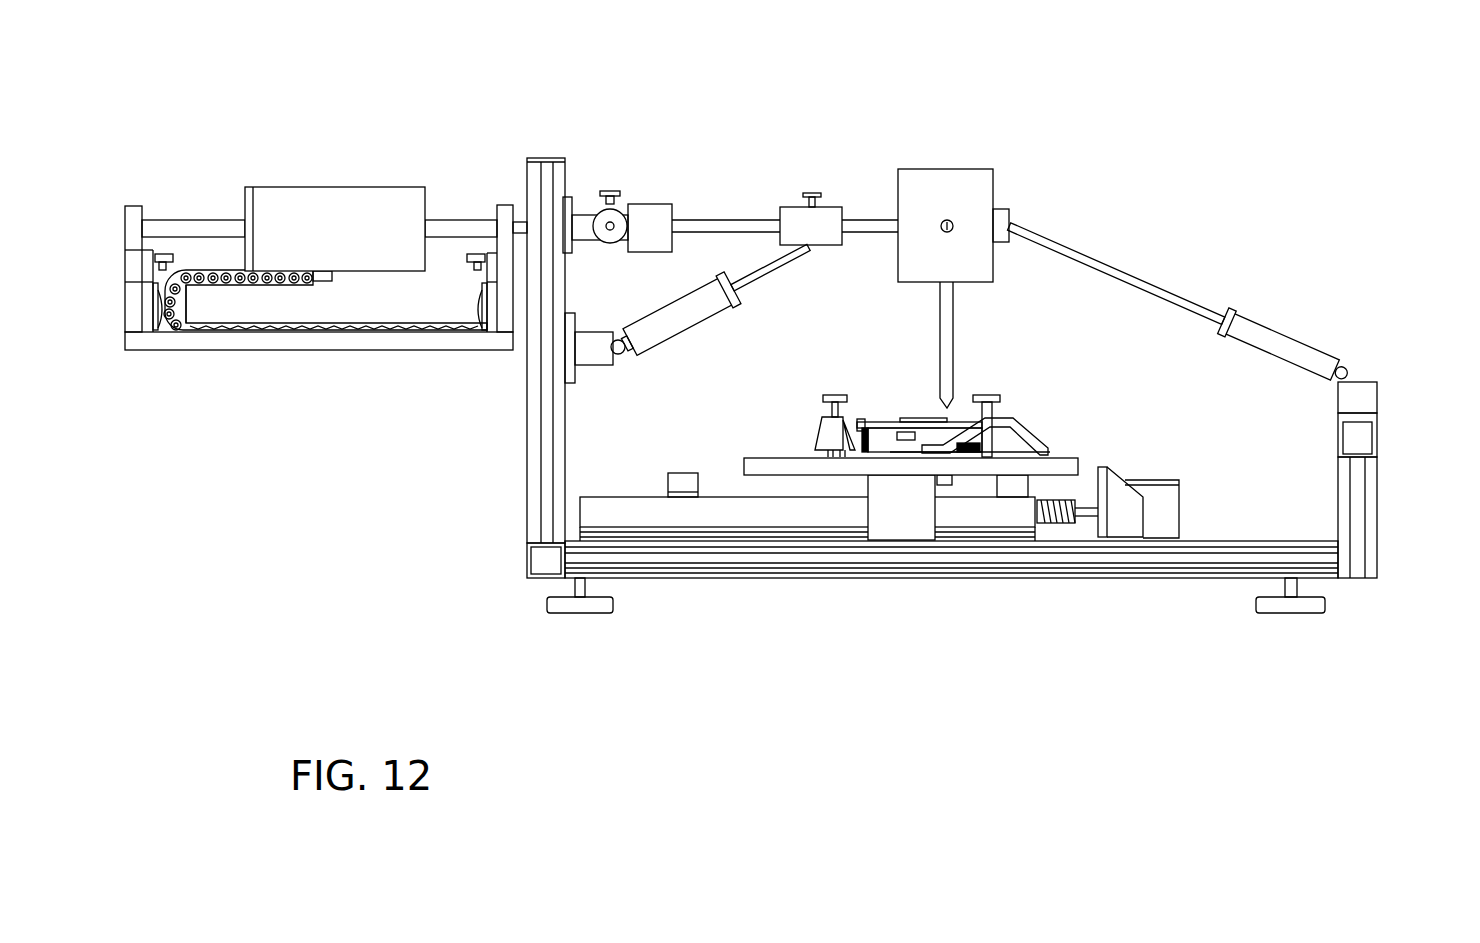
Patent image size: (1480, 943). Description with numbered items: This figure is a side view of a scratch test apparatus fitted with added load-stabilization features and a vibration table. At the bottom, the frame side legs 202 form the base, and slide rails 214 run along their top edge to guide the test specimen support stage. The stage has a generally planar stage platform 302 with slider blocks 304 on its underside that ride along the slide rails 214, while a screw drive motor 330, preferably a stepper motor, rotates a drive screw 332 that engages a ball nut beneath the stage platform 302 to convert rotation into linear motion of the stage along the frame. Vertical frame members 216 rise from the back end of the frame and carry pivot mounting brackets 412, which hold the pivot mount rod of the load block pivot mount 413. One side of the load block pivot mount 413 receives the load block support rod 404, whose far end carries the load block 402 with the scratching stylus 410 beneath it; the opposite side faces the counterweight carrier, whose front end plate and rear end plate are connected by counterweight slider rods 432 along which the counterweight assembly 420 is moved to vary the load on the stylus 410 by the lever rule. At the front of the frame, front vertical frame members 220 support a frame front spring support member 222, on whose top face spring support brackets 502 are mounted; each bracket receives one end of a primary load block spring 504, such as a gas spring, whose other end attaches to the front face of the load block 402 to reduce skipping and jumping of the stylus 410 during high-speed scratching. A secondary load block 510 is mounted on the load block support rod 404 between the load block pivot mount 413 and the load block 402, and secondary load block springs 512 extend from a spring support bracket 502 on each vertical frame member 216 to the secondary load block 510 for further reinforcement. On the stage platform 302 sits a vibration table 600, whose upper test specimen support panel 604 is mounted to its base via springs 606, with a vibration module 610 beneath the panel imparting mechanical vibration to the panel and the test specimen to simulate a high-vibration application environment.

The frame side leg 202 is at (1180, 575).
The slide rail 214 is at (775, 510).
The vertical frame member 216 is at (543, 175).
The front vertical frame member 220 is at (1367, 500).
The frame front spring support member 222 is at (1377, 442).
The stage platform 302 is at (1070, 468).
The slider block 304 is at (920, 510).
The screw drive motor 330 is at (1182, 500).
The drive screw 332 is at (1060, 525).
The load block 402 is at (958, 183).
The load block support rod 404 is at (747, 225).
The stylus 410 is at (947, 367).
The pivot mounting bracket 412 is at (578, 228).
The load block pivot mount 413 is at (643, 212).
The counterweight assembly 420 is at (352, 205).
The counterweight slider rod 432 is at (186, 227).
The spring support bracket 502 is at (587, 358).
The primary load block spring 504 is at (1140, 282).
The secondary load block 510 is at (825, 218).
The secondary load block spring 512 is at (680, 320).
The vibration table 600 is at (887, 402).
The upper test specimen support panel 604 is at (965, 423).
The spring 606 is at (865, 437).
The vibration module 610 is at (908, 442).